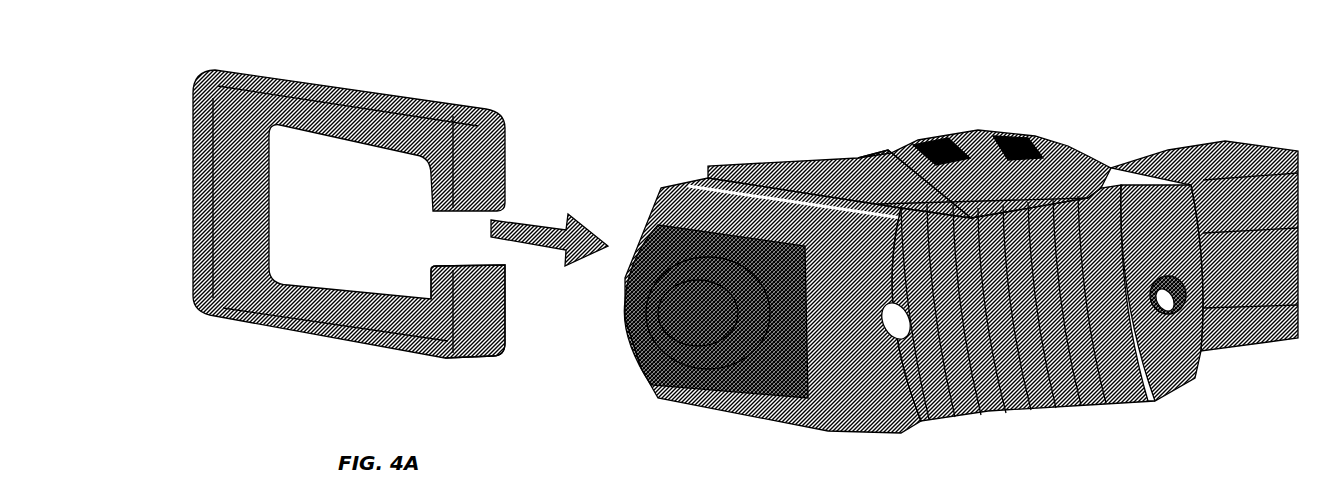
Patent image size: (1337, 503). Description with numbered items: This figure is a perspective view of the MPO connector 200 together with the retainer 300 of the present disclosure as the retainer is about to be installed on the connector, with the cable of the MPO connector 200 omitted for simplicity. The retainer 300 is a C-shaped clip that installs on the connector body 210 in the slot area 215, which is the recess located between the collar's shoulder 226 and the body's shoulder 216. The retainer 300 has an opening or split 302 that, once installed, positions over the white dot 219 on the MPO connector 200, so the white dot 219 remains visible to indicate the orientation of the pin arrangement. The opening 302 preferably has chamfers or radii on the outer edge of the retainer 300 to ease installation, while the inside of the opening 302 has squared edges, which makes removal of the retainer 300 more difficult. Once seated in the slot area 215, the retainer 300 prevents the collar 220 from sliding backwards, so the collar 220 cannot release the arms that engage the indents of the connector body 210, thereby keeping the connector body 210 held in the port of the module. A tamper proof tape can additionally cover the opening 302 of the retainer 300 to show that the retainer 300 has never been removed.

The MPO connector 200 is at (948, 279).
The connector body 210 is at (1167, 142).
The slot area 215 is at (884, 229).
The body's shoulder 216 is at (660, 180).
The white dot 219 is at (868, 333).
The collar 220 is at (862, 150).
The collar's shoulder 226 is at (723, 155).
The retainer 300 is at (204, 68).
The opening 302 is at (497, 252).